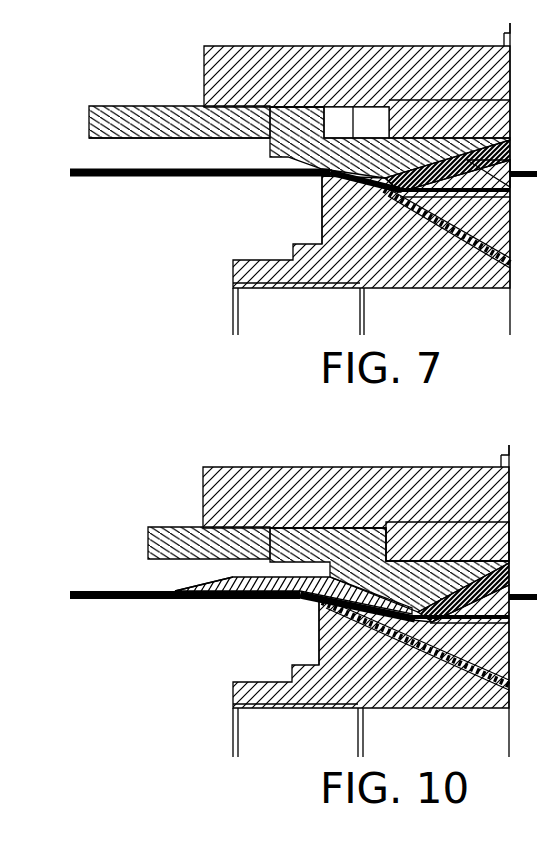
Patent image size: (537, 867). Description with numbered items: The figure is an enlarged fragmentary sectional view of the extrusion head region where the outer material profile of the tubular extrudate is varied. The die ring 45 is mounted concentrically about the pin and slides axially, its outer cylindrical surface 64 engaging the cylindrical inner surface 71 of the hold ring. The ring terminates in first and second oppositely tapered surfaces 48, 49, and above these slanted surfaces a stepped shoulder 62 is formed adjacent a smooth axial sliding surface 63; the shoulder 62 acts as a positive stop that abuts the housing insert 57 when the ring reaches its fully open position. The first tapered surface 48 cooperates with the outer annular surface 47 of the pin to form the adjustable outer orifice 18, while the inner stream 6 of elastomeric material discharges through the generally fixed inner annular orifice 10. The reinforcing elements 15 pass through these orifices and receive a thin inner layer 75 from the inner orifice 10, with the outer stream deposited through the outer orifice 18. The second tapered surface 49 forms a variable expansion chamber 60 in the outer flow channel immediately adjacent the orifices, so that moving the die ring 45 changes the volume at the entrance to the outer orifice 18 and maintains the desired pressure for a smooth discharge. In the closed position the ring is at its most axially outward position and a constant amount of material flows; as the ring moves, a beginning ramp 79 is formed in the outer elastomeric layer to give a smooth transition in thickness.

In FIG. 7, the inner stream 6 is at (485, 264).
In FIG. 7, the inner annular orifice 10 is at (321, 178).
In FIG. 10, the inner annular orifice 10 is at (440, 626).
In FIG. 7, the reinforcing elements 15 is at (194, 177).
In FIG. 10, the reinforcing elements 15 is at (132, 599).
In FIG. 10, the adjustable outer orifice 18 is at (353, 613).
In FIG. 7, the die ring 45 is at (142, 138).
In FIG. 7, the outer annular surface 47 is at (340, 212).
In FIG. 7, the first tapered surface 48 is at (268, 157).
In FIG. 10, the first tapered surface 48 is at (350, 574).
In FIG. 7, the second tapered surface 49 is at (444, 205).
In FIG. 10, the second tapered surface 49 is at (483, 657).
In FIG. 10, the housing insert 57 is at (422, 540).
In FIG. 7, the variable expansion chamber 60 is at (478, 142).
In FIG. 7, the stepped shoulder 62 is at (332, 126).
In FIG. 7, the axial sliding surface 63 is at (354, 136).
In FIG. 7, the outer cylindrical surface 64 is at (140, 135).
In FIG. 10, the outer cylindrical surface 64 is at (168, 548).
In FIG. 7, the cylindrical inner surface 71 is at (224, 108).
In FIG. 10, the cylindrical inner surface 71 is at (227, 527).
In FIG. 10, the inner layer 75 is at (283, 600).
In FIG. 10, the beginning ramp 79 is at (205, 580).